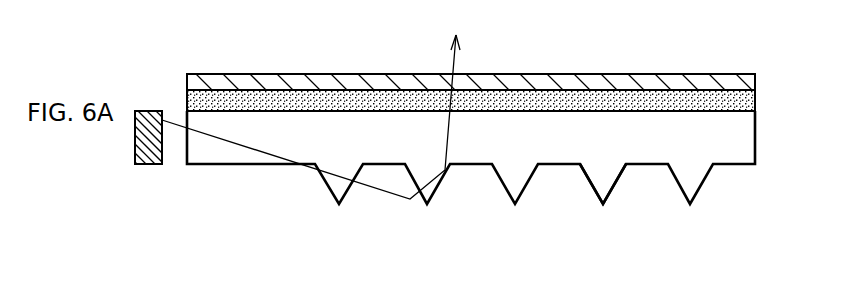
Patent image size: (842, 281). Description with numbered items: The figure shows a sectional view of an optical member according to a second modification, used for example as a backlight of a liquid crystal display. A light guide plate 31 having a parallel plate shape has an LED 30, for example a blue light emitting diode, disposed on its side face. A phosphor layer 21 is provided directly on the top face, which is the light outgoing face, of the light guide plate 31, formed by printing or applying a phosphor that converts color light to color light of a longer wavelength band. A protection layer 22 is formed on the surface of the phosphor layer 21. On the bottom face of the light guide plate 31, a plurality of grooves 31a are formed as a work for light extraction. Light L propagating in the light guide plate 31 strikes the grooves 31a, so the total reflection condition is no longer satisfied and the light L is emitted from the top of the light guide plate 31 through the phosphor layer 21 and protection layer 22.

The LED 30 is at (146, 111).
The protection layer 22 is at (748, 82).
The phosphor layer 21 is at (748, 106).
The light guide plate 31 is at (748, 137).
The grooves 31a is at (615, 183).
The light ray L is at (312, 103).